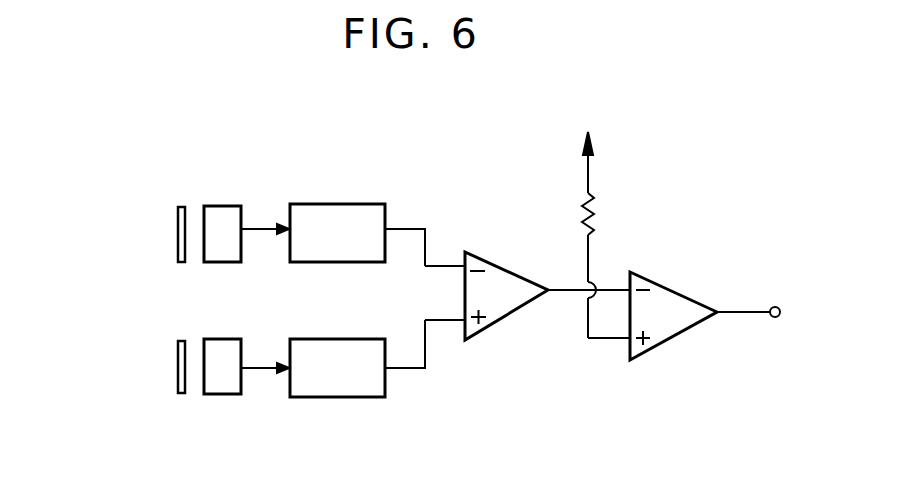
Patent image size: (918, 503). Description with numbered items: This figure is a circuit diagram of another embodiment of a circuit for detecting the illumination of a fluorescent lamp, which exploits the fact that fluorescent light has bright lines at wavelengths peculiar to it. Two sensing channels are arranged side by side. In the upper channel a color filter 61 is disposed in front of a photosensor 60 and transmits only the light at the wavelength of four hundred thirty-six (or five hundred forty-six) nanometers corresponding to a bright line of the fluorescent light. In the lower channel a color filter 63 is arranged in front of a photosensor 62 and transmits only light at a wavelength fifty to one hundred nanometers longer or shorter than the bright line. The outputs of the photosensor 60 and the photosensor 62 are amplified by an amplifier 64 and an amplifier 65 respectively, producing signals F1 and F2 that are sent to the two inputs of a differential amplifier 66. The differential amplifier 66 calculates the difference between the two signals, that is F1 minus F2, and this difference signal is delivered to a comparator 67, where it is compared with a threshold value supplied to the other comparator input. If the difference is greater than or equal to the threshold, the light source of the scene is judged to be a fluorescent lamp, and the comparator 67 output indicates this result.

The photosensor 60 is at (219, 215).
The color filter 61 is at (177, 237).
The photosensor 62 is at (224, 385).
The color filter 63 is at (177, 372).
The amplifier 64 is at (337, 205).
The amplifier 65 is at (338, 398).
The differential amplifier 66 is at (510, 305).
The comparator 67 is at (680, 320).
The signal F1 is at (412, 229).
The signal F2 is at (412, 368).